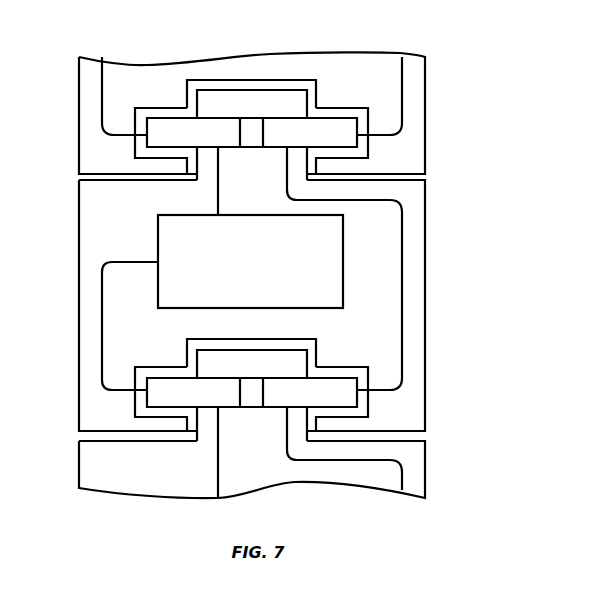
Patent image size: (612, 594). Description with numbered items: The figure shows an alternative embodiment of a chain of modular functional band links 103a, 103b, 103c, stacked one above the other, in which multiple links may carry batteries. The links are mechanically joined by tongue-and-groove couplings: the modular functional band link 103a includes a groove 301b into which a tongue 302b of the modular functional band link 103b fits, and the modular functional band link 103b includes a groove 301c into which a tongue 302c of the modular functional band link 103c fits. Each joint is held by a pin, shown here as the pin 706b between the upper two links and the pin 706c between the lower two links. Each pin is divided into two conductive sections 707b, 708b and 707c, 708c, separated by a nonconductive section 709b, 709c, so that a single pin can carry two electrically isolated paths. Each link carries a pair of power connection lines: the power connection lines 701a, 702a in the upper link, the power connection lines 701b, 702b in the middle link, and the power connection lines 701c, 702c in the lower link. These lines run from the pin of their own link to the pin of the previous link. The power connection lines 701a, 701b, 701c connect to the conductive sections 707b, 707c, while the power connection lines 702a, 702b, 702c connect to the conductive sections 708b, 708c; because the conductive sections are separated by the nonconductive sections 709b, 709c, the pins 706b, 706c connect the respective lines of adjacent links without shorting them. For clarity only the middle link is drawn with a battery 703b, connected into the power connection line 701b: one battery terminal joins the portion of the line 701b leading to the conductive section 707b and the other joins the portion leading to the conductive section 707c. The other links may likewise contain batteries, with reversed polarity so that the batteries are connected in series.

The modular functional band link 103a is at (425, 160).
The modular functional band link 103b is at (425, 308).
The modular functional band link 103c is at (425, 455).
The groove 301b is at (278, 83).
The groove 301c is at (315, 343).
The tongue 302b is at (212, 90).
The tongue 302c is at (255, 350).
The power connection line 701a is at (102, 93).
The power connection line 701b is at (218, 200).
The power connection line 701c is at (218, 462).
The power connection line 702a is at (402, 89).
The power connection line 702b is at (402, 219).
The power connection line 702c is at (402, 482).
The battery 703b is at (343, 260).
The pin 706b is at (166, 117).
The pin 706c is at (335, 408).
The conductive section 707b is at (150, 140).
The conductive section 707c is at (150, 398).
The conductive section 708b is at (350, 139).
The conductive section 708c is at (350, 397).
The nonconductive section 709b is at (254, 148).
The nonconductive section 709c is at (255, 408).